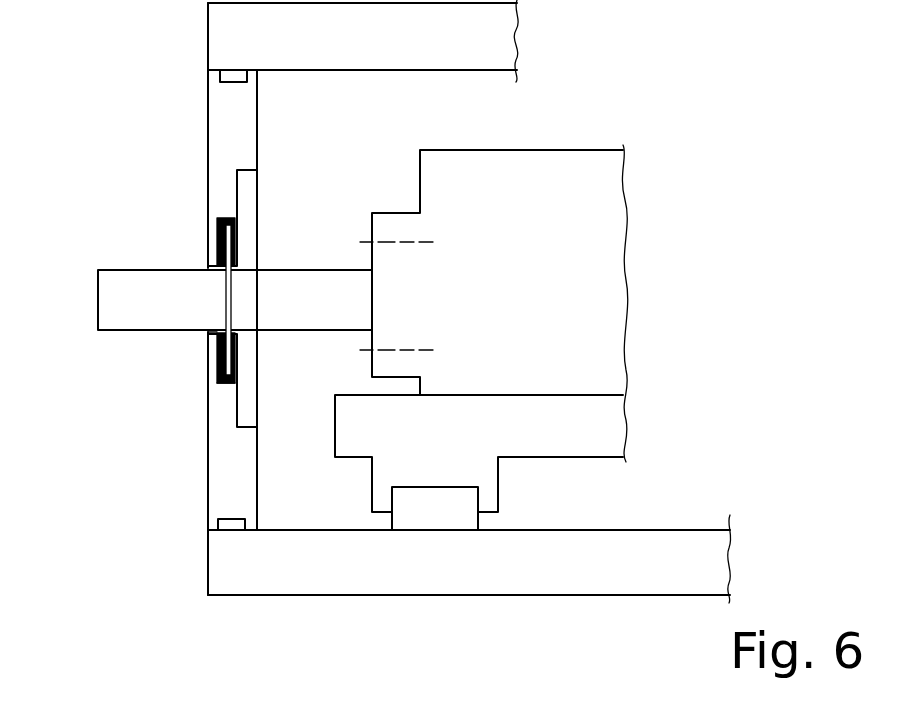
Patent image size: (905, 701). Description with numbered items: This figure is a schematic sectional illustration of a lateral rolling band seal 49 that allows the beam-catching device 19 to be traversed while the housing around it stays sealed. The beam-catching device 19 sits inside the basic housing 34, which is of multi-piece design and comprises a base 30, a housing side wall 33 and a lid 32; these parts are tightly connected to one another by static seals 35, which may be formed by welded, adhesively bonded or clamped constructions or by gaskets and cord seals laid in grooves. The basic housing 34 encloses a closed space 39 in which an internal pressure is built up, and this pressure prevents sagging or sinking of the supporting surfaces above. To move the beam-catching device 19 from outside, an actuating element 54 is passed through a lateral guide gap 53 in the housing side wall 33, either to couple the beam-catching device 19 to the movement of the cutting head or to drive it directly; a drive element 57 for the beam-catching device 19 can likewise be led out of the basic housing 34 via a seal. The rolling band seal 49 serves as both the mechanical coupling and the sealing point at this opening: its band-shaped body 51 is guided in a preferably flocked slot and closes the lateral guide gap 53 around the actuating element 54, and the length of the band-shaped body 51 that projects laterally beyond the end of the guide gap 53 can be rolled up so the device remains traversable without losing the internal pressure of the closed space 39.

The beam-catching device 19 is at (606, 114).
The base 30 is at (340, 568).
The lid 32 is at (238, 40).
The housing side wall 33 is at (228, 452).
The basic housing 34 is at (188, 605).
The static seal 35 is at (198, 111).
The closed space 39 is at (350, 199).
The rolling band seal 49 is at (195, 349).
The band-shaped body 51 is at (215, 232).
The lateral guide gap 53 is at (200, 337).
The actuating element 54 is at (112, 302).
The drive element 57 is at (223, 295).